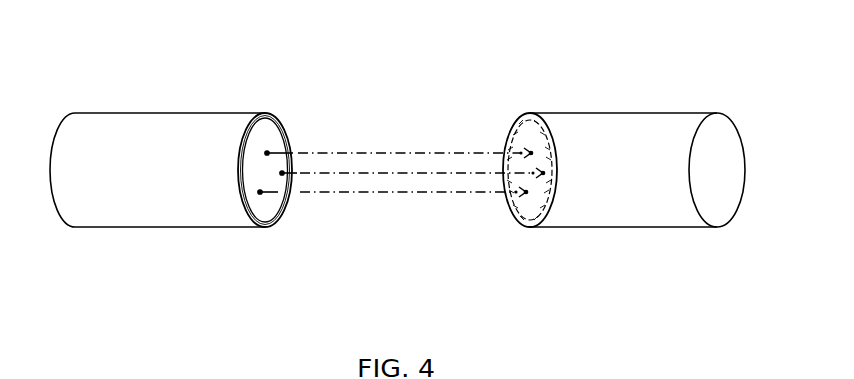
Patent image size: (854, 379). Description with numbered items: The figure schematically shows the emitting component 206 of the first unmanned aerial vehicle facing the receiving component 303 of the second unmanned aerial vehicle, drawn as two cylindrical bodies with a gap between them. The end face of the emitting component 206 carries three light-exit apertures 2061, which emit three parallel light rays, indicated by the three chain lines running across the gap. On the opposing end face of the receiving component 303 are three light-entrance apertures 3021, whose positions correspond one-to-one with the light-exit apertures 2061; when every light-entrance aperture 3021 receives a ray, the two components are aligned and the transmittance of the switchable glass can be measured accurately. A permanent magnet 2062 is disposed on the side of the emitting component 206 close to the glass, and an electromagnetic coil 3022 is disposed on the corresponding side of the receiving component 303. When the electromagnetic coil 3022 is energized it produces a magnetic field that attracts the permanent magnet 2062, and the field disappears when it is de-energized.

The emitting component 206 is at (210, 113).
The light-exit apertures 2061 is at (269, 150).
The permanent magnet 2062 is at (284, 223).
The receiving component 303 is at (653, 113).
The electromagnetic coil 3022 is at (523, 215).
The light-entrance apertures 3021 is at (526, 194).